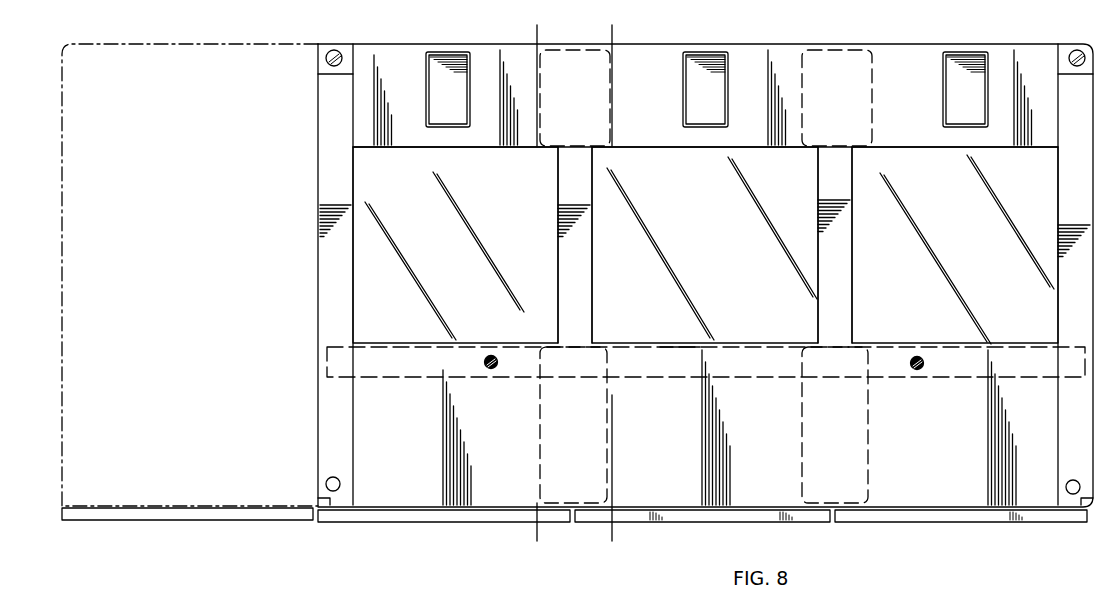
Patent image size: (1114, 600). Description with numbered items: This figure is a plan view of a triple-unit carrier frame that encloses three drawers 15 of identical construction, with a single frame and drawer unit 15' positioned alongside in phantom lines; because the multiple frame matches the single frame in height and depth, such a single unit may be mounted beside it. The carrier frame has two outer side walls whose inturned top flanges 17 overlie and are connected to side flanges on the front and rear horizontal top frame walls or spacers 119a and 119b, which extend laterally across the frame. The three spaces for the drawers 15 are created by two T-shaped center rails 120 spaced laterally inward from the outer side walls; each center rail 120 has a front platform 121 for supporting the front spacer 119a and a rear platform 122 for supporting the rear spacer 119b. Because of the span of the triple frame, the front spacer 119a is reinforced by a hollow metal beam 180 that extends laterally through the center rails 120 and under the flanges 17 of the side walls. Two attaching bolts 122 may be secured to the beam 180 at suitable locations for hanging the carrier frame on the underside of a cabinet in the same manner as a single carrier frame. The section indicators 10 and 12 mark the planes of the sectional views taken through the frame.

The section line 10- 10 is at (537, 25).
The section line 12- 12 is at (612, 25).
The drawer 15 is at (705, 245).
The single frame and drawer unit 15' is at (190, 282).
The inturned top flange 17 is at (326, 286).
The front spacer 119a is at (752, 387).
The rear spacer 119b is at (650, 137).
The T-shaped center rail 120 is at (590, 286).
The front platform 121 is at (603, 398).
The rear platform 122 is at (538, 139).
The hollow metal beam 180 is at (683, 346).